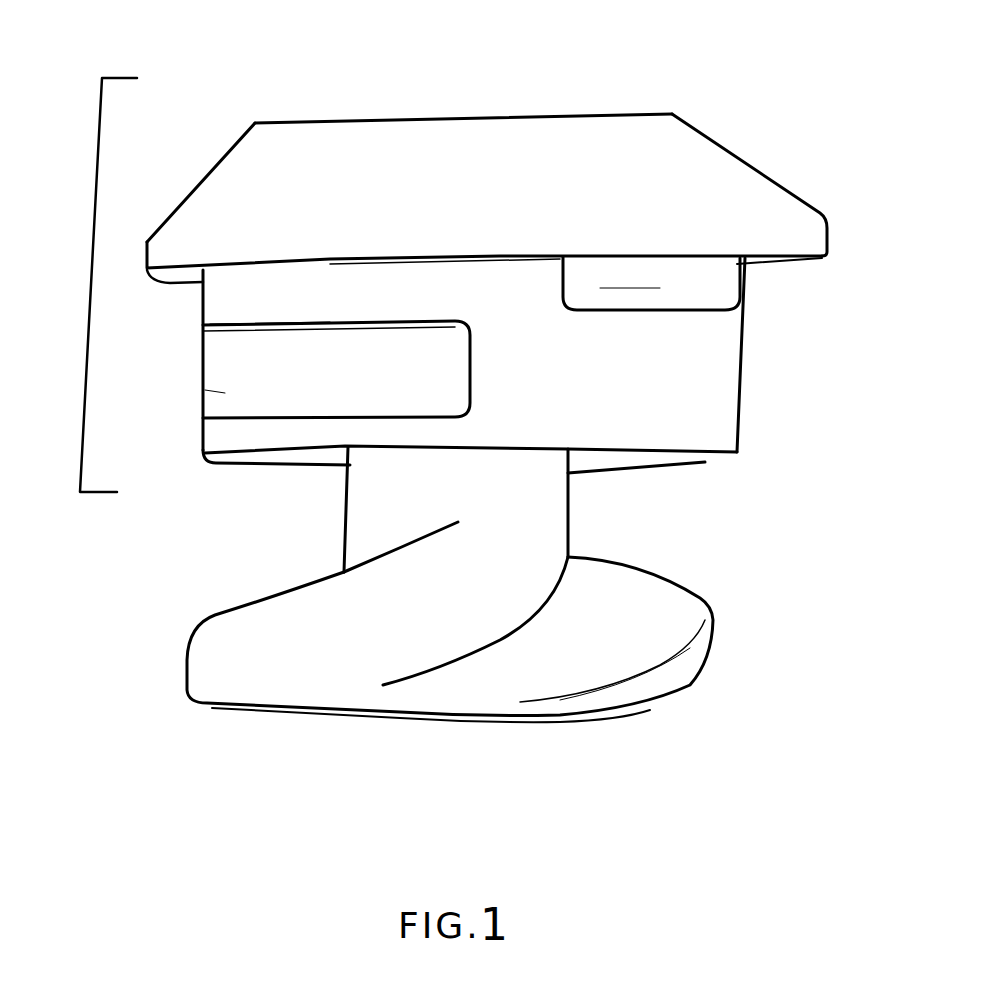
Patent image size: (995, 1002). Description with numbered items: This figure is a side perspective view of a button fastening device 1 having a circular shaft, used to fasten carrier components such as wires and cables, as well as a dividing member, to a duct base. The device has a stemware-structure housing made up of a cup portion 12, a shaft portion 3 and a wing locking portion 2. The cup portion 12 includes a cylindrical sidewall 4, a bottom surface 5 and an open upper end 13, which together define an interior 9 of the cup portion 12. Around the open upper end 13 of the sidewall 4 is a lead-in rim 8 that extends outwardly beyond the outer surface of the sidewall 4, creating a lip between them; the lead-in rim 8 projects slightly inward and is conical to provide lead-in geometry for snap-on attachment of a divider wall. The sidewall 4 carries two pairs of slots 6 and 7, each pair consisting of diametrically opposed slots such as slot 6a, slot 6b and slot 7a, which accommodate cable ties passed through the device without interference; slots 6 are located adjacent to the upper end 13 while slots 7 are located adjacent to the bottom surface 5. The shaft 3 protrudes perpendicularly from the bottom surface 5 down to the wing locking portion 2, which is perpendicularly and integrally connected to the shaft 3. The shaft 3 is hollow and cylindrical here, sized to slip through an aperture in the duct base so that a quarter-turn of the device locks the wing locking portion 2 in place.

The button fastening device 1 is at (752, 100).
The wing locking portion 2 is at (713, 598).
The shaft portion 3 is at (568, 517).
The cylindrical sidewall 4 is at (738, 410).
The bottom surface 5 is at (703, 460).
The slots 6 is at (722, 285).
The slot 6a is at (672, 288).
The slot 6b is at (325, 325).
The slots 7 is at (237, 373).
The slot 7a is at (236, 395).
The lead-in rim 8 is at (218, 163).
The interior 9 is at (488, 110).
The cup portion 12 is at (93, 320).
The open upper end 13 is at (375, 110).